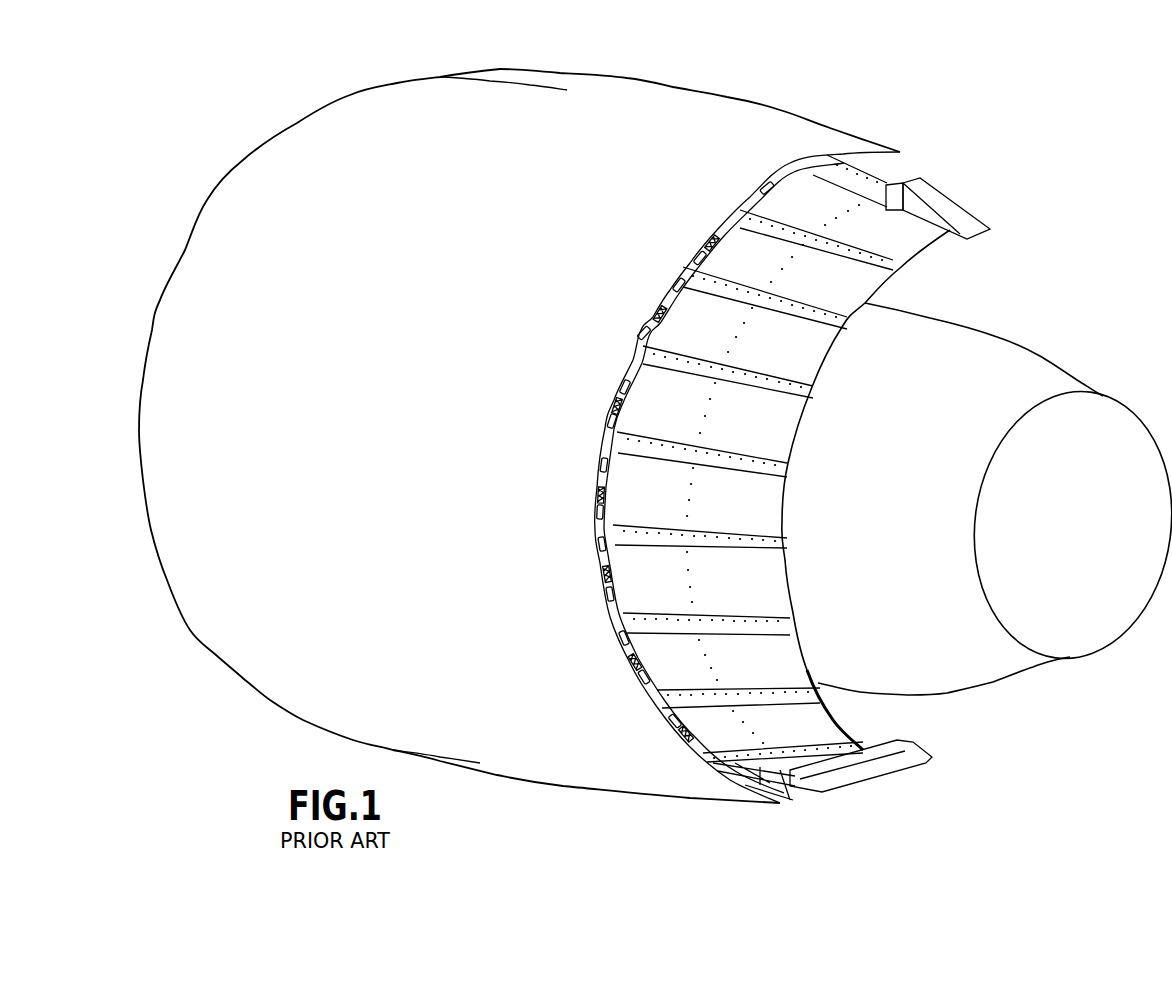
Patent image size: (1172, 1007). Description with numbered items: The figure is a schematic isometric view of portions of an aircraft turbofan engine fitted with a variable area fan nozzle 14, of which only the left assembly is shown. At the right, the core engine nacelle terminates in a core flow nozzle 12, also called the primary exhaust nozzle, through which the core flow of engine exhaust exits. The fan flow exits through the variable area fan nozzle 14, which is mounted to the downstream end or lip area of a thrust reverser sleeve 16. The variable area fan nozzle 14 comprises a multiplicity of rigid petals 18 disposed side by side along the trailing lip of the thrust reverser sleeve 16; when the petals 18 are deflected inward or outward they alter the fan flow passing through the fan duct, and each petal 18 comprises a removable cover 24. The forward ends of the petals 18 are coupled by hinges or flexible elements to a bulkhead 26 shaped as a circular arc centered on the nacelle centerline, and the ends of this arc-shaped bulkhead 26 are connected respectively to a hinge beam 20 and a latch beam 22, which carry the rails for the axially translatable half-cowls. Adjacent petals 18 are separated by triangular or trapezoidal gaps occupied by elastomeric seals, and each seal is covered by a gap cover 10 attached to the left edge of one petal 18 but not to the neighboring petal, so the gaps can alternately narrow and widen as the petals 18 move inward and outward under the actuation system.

The gap cover 10 is at (842, 328).
The core flow nozzle 12 is at (1037, 358).
The variable area fan nozzle 14 is at (818, 431).
The thrust reverser sleeve 16 is at (749, 102).
The petal 18 is at (927, 242).
The hinge beam 20 is at (963, 208).
The latch beam 22 is at (862, 777).
The removable cover 24 is at (655, 408).
The bulkhead 26 is at (806, 164).